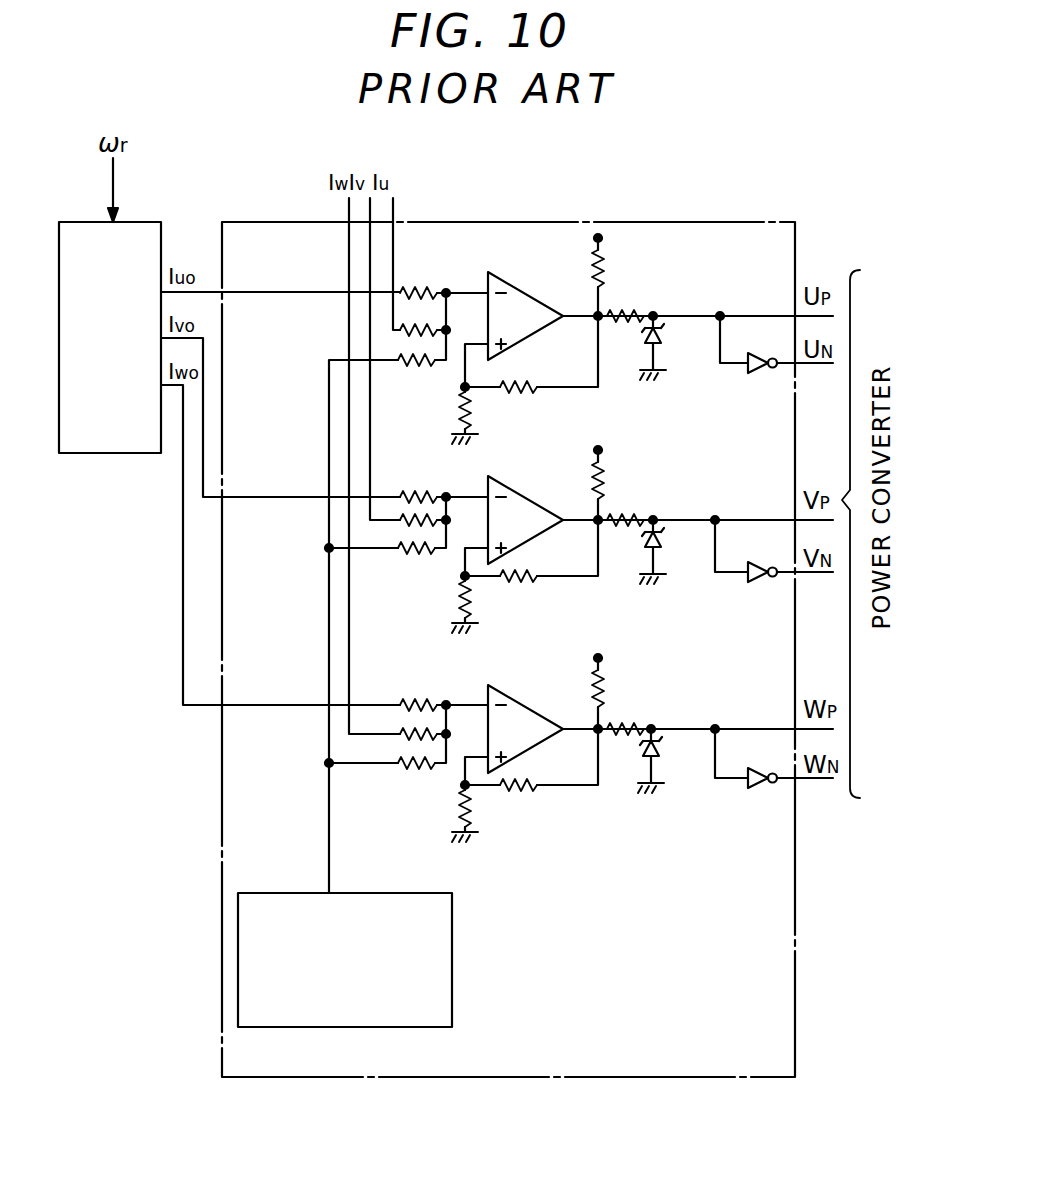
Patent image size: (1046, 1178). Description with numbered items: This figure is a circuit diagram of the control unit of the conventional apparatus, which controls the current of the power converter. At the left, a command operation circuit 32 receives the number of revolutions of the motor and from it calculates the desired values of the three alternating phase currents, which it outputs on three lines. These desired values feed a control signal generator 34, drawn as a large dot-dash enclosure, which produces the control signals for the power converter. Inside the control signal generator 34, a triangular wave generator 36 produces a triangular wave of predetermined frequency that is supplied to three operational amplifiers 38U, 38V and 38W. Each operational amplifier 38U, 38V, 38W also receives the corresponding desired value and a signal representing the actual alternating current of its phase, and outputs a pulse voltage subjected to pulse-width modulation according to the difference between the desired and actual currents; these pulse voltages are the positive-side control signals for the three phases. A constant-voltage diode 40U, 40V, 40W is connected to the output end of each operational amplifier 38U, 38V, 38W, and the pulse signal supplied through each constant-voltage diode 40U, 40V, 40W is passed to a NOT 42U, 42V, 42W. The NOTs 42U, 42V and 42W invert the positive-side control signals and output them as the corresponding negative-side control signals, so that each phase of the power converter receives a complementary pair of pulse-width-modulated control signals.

The command operation circuit 32 is at (142, 456).
The control signal generator 34 is at (218, 880).
The triangular wave generator 36 is at (452, 927).
The operational amplifier 38U is at (536, 292).
The operational amplifier 38V is at (536, 504).
The operational amplifier 38W is at (536, 712).
The constant-voltage diode 40U is at (663, 343).
The constant-voltage diode 40V is at (663, 552).
The constant-voltage diode 40W is at (661, 757).
The NOT 42U is at (753, 373).
The NOT 42V is at (752, 582).
The NOT 42W is at (752, 789).